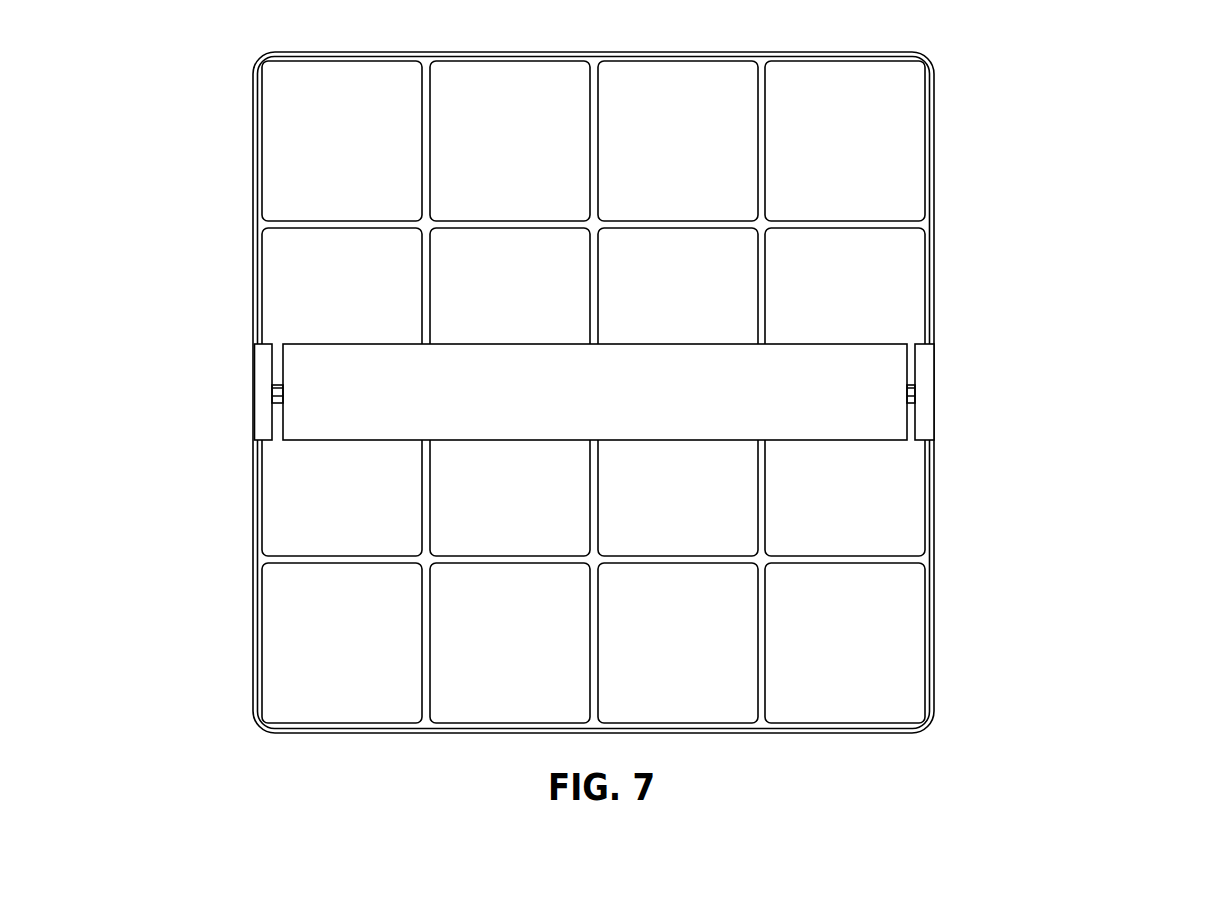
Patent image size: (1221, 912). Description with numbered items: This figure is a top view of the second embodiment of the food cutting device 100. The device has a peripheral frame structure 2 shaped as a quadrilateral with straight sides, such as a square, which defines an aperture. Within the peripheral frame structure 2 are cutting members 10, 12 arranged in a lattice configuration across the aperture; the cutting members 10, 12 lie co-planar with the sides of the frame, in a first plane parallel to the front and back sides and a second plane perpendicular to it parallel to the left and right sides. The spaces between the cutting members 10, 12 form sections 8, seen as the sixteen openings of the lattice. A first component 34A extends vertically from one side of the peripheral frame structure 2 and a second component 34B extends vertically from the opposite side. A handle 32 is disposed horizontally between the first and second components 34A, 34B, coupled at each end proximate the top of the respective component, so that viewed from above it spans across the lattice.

The food cutting device 100 is at (671, 387).
The peripheral frame structure 2 is at (940, 162).
The sections 8 is at (289, 121).
The cutting member 10 is at (332, 567).
The cutting member 12 is at (775, 670).
The handle 32 is at (347, 366).
The first component 34A is at (238, 423).
The second component 34B is at (924, 388).